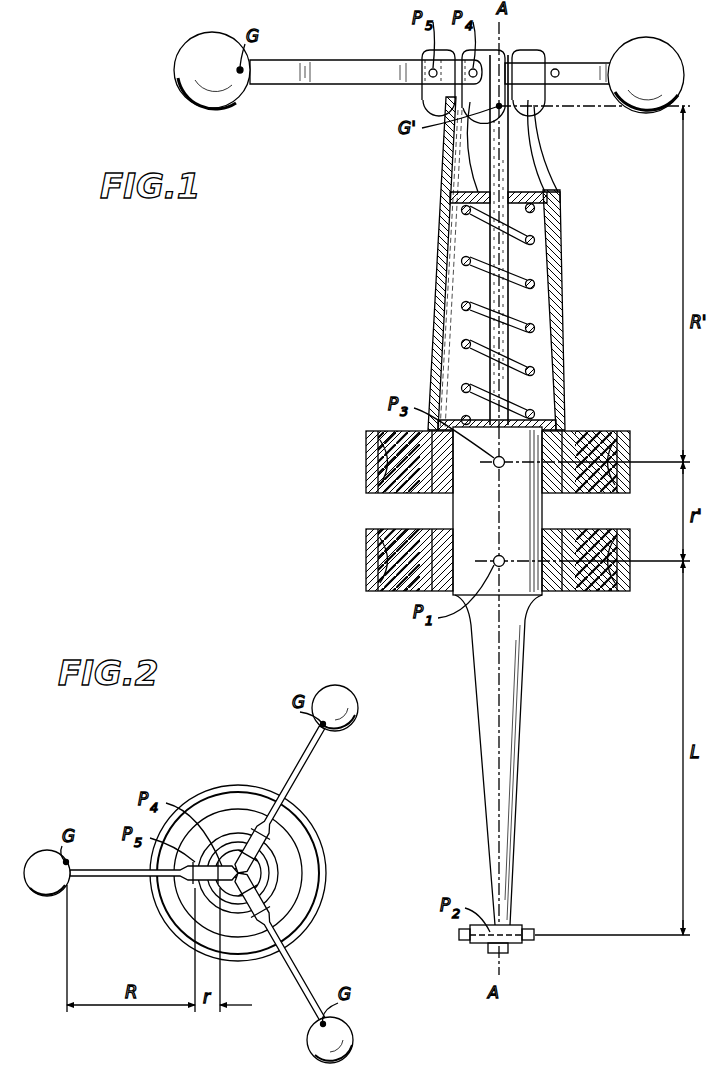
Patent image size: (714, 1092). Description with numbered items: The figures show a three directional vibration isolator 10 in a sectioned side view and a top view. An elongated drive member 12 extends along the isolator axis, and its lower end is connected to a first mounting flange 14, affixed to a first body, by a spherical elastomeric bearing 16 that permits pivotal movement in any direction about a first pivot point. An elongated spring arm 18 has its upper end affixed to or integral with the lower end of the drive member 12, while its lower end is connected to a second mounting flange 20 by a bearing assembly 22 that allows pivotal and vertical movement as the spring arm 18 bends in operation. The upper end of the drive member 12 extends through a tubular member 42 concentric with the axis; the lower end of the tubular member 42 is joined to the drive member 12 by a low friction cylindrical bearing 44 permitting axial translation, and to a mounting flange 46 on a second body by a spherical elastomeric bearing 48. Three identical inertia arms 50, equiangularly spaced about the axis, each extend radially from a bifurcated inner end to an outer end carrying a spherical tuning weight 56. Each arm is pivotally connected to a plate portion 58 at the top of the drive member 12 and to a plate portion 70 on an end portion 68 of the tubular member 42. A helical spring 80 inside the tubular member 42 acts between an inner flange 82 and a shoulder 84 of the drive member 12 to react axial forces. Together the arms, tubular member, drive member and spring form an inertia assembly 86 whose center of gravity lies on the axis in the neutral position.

In FIG. 1, the three directional vibration isolator 10 is at (602, 268).
In FIG. 1, the drive member 12 is at (510, 300).
In FIG. 1, the first mounting flange 14 is at (366, 560).
In FIG. 1, the spherical elastomeric bearing 16 is at (595, 592).
In FIG. 1, the spring arm 18 is at (510, 760).
In FIG. 1, the second mounting flange 20 is at (535, 930).
In FIG. 1, the bearing assembly 22 is at (514, 947).
In FIG. 1, the tubular member 42 is at (440, 275).
In FIG. 1, the cylindrical bearing 44 is at (560, 495).
In FIG. 1, the mounting flange 46 is at (366, 452).
In FIG. 1, the spherical elastomeric bearing 48 is at (585, 431).
In FIG. 1, the inertia arm 50 is at (322, 68).
In FIG. 2, the inertia arm 50 is at (303, 770).
In FIG. 1, the spherical tuning weight 56 is at (200, 45).
In FIG. 2, the spherical tuning weight 56 is at (346, 700).
In FIG. 1, the plate portion 58 is at (495, 55).
In FIG. 2, the plate portion 58 is at (238, 873).
In FIG. 1, the end portion 68 is at (530, 154).
In FIG. 1, the plate portion 70 is at (430, 95).
In FIG. 1, the helical spring 80 is at (536, 240).
In FIG. 1, the inner flange 82 is at (455, 214).
In FIG. 1, the shoulder 84 is at (548, 424).
In FIG. 1, the inertia assembly 86 is at (568, 345).